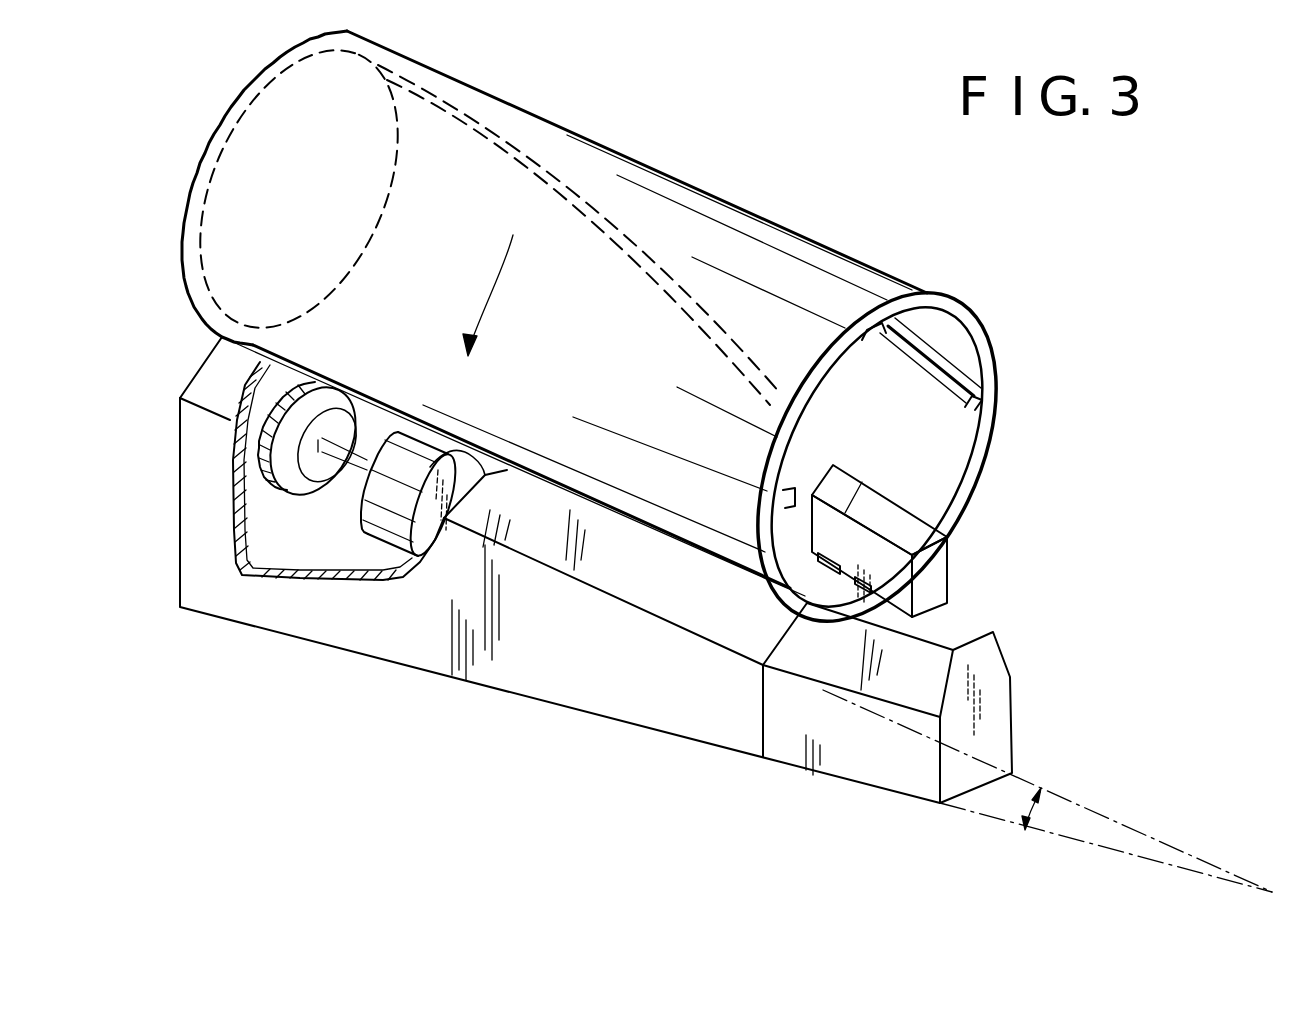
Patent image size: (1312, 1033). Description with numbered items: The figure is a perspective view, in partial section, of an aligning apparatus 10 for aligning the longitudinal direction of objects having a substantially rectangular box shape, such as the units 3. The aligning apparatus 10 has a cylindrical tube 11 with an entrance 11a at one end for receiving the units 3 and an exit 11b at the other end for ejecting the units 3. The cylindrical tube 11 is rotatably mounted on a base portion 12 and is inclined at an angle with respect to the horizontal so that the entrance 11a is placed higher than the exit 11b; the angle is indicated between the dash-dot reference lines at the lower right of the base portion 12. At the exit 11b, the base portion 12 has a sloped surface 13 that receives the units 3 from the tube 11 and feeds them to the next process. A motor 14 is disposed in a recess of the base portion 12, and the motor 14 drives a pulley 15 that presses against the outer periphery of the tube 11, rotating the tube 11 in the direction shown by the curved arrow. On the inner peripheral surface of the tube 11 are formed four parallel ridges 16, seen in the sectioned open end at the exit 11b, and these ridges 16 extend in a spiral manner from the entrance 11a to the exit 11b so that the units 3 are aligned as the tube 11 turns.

The aligning apparatus 10 is at (690, 171).
The cylindrical tube 11 is at (810, 258).
The entrance 11a is at (222, 152).
The exit 11b is at (945, 462).
The parallel ridges 16 is at (882, 325).
The unit 3 is at (942, 566).
The sloped surface 13 is at (970, 622).
The base portion 12 is at (585, 700).
The motor 14 is at (376, 505).
The pulley 15 is at (277, 483).